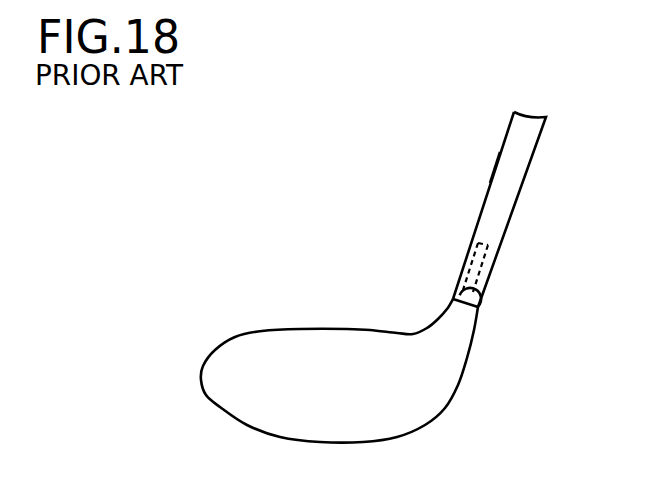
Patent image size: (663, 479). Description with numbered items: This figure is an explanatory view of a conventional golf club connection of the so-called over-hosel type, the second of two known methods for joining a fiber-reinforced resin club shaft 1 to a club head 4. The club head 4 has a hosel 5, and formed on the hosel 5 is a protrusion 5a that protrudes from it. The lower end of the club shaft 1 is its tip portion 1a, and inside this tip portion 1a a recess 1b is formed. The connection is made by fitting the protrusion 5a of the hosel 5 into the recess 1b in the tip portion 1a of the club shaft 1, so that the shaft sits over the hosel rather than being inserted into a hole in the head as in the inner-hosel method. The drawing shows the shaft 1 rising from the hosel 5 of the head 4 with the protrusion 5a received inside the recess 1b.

The club shaft 1 is at (545, 160).
The tip portion 1a is at (507, 223).
The recess 1b is at (478, 311).
The club head 4 is at (202, 350).
The hosel 5 is at (453, 300).
The protrusion 5a is at (475, 260).